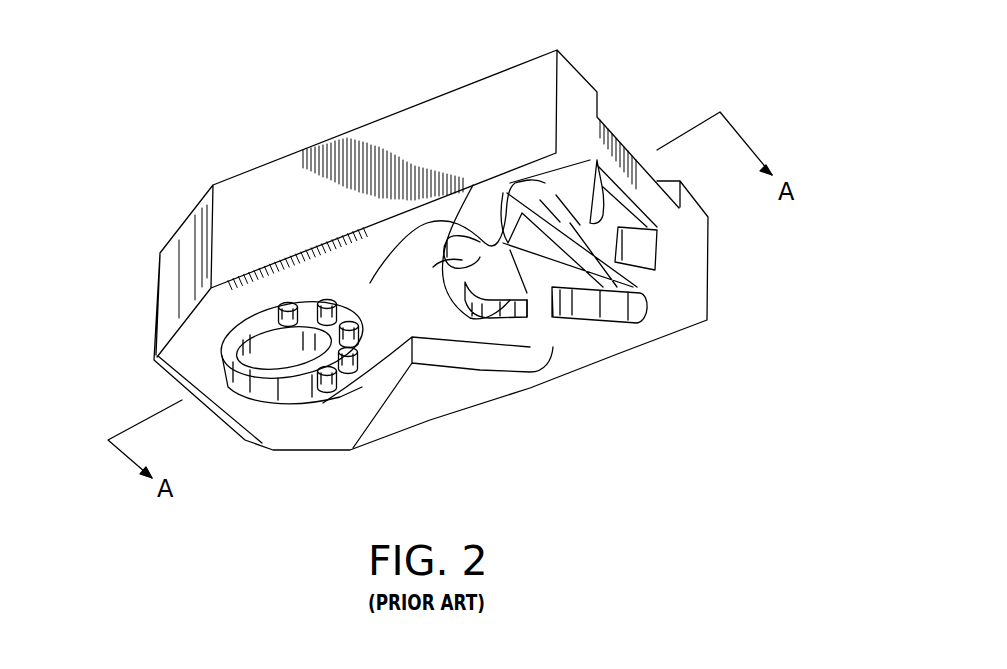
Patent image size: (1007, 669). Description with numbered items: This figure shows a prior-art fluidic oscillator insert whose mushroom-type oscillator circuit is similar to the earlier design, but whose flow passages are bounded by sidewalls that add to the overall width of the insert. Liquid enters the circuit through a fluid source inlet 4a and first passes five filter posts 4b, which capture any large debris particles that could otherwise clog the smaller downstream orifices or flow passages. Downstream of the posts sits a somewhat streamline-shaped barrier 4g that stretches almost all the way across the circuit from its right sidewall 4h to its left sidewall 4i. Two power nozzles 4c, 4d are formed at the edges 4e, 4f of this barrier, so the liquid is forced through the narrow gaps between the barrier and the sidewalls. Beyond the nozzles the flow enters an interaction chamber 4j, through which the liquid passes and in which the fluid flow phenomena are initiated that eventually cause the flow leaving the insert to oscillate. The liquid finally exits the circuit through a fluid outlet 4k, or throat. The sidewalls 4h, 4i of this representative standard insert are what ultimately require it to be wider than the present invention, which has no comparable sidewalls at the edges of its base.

The fluid source inlet 4a is at (278, 352).
The filter posts 4b is at (329, 393).
The power nozzle 4c is at (473, 183).
The power nozzle 4d is at (543, 320).
The edge of barrier 4e is at (430, 282).
The edge of barrier 4f is at (527, 313).
The streamline-shaped barrier 4g is at (480, 313).
The right sidewall 4h is at (393, 360).
The left sidewall 4i is at (433, 267).
The interaction chamber 4j is at (570, 335).
The fluid outlet 4k is at (620, 210).